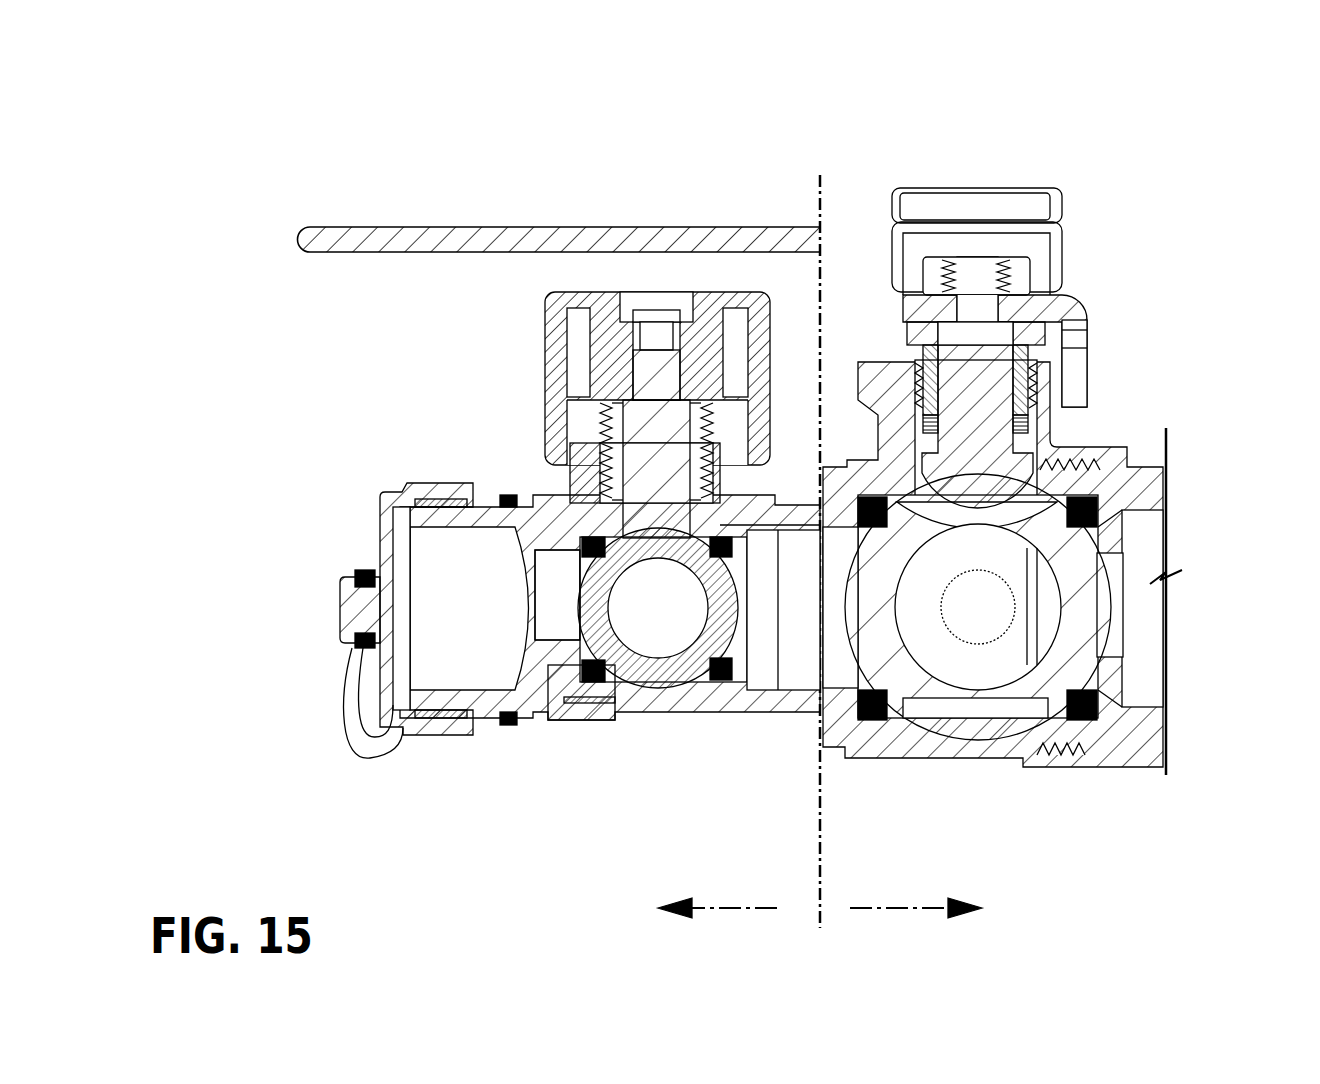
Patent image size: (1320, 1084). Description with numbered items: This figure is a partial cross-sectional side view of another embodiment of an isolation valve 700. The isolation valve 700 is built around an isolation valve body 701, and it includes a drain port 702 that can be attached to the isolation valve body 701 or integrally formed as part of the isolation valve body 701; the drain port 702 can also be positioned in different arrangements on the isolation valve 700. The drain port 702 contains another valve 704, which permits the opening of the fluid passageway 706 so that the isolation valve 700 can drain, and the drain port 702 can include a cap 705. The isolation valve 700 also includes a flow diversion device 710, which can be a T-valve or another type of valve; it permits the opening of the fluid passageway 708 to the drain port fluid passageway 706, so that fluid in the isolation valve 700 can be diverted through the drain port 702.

The isolation valve 700 is at (775, 484).
The isolation valve body 701 is at (837, 643).
The drain port 702 is at (485, 703).
The valve 704 is at (683, 660).
The cap 705 is at (388, 492).
The fluid passageway 706 is at (565, 622).
The fluid passageway 708 is at (860, 687).
The flow diversion device 710 is at (1072, 577).